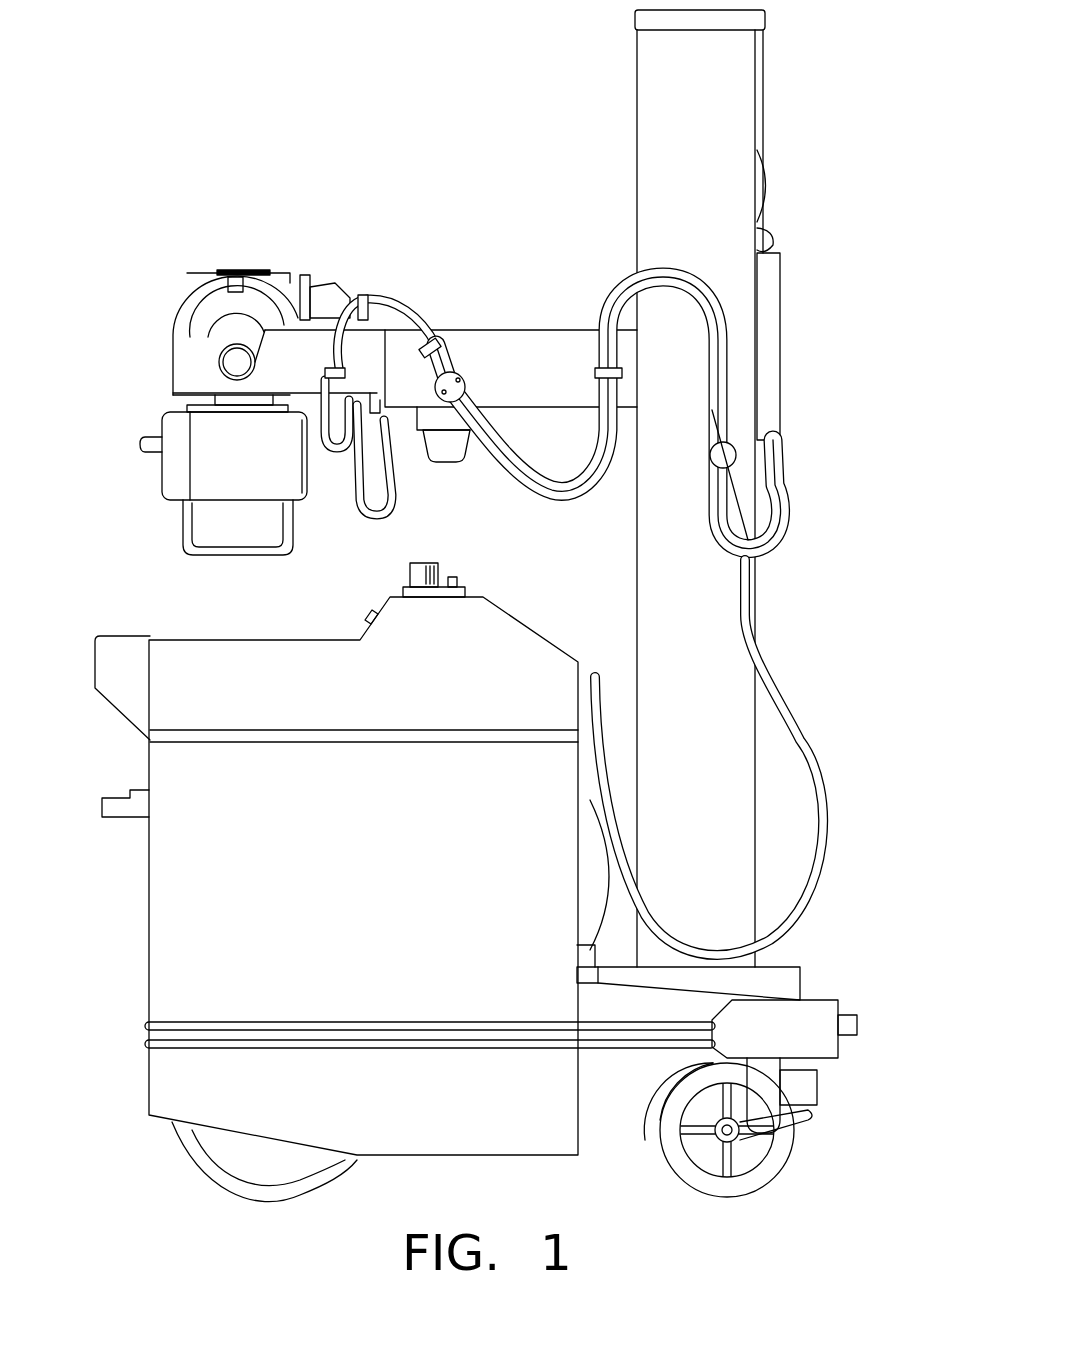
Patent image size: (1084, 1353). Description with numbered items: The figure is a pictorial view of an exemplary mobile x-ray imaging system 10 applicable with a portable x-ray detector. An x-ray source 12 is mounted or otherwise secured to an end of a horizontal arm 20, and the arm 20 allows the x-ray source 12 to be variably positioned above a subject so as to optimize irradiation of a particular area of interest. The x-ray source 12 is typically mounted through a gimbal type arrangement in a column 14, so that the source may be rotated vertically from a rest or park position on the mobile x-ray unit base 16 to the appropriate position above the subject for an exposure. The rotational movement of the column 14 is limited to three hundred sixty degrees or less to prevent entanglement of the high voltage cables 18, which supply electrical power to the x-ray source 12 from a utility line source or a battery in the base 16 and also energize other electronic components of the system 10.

The mobile x-ray imaging system 10 is at (800, 197).
The x-ray source 12 is at (237, 318).
The column 14 is at (705, 129).
The mobile x-ray unit base 16 is at (329, 850).
The high voltage cables 18 is at (790, 690).
The horizontal arm 20 is at (543, 348).